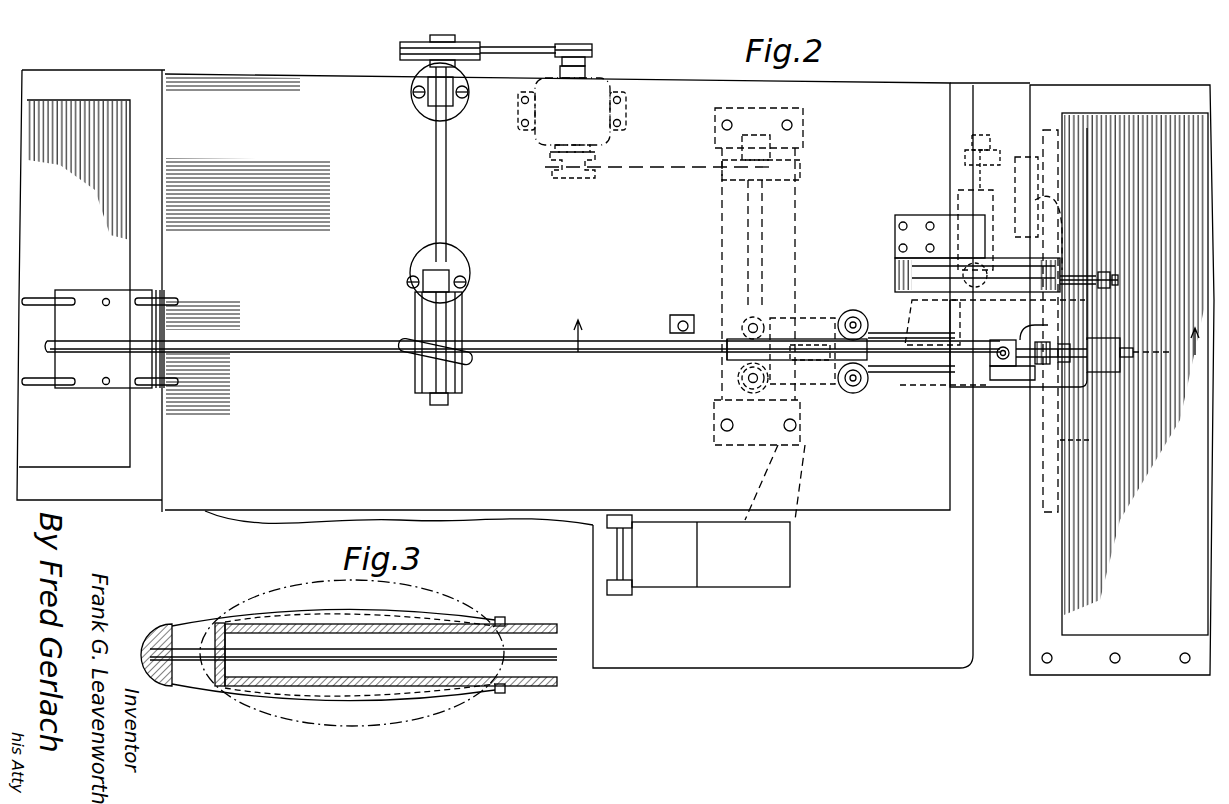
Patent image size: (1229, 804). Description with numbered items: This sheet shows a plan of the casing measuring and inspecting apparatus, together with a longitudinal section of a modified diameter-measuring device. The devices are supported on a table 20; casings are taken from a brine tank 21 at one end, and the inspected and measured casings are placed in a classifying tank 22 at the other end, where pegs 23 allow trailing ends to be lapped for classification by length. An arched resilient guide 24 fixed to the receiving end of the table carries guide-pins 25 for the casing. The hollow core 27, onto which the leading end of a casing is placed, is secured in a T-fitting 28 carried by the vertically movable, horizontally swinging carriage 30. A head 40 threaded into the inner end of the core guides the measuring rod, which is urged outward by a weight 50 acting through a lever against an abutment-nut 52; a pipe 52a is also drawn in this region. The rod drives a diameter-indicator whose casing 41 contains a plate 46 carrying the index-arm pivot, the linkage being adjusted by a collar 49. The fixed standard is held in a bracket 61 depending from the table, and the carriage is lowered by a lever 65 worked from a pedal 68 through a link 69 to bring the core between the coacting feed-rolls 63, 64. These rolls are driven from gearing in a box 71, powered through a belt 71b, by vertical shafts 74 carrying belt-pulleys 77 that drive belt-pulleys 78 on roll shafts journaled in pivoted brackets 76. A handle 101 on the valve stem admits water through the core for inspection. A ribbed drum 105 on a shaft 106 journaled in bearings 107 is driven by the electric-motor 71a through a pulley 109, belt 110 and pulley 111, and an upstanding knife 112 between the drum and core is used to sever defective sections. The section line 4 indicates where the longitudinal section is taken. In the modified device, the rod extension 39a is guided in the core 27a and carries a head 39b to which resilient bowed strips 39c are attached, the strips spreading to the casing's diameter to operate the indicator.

In FIG. 2, the table 20 is at (880, 527).
In FIG. 2, the tank 21 is at (130, 432).
In FIG. 2, the classifying tank 22 is at (1060, 566).
In FIG. 2, the pegs 23 is at (1115, 652).
In FIG. 2, the arched guide 24 is at (109, 339).
In FIG. 2, the guide-pins 25 is at (45, 305).
In FIG. 2, the core 27 is at (1089, 448).
In FIG. 2, the T-fitting 28 is at (522, 390).
In FIG. 2, the carriage 30 is at (1095, 388).
In FIG. 2, the head 40 is at (1142, 312).
In FIG. 2, the indicator casing 41 is at (895, 281).
In FIG. 2, the plate 46 is at (1060, 263).
In FIG. 2, the collar 49 is at (1120, 281).
In FIG. 2, the weight 50 is at (1131, 358).
In FIG. 2, the abutment-nut 52 is at (1065, 366).
In FIG. 2, the pipe 52a is at (1010, 325).
In FIG. 2, the bracket 61 is at (962, 224).
In FIG. 2, the feed-roll 63 is at (856, 394).
In FIG. 2, the feed-roll 64 is at (864, 317).
In FIG. 2, the lever 65 is at (932, 322).
In FIG. 2, the pedal 68 is at (698, 555).
In FIG. 2, the link 69 is at (838, 339).
In FIG. 2, the gear box 71 is at (715, 366).
In FIG. 2, the electric-motor 71a is at (625, 113).
In FIG. 2, the belt 71b is at (647, 170).
In FIG. 2, the vertical drive-shafts 74 is at (764, 320).
In FIG. 2, the bracket 76 is at (810, 325).
In FIG. 2, the belt-pulley 77 is at (745, 387).
In FIG. 2, the belt-pulley 78 is at (745, 316).
In FIG. 2, the handle 101 is at (900, 385).
In FIG. 2, the drum 105 is at (487, 324).
In FIG. 2, the shaft 106 is at (447, 182).
In FIG. 2, the bearings 107 is at (424, 106).
In FIG. 2, the pulley 109 is at (590, 46).
In FIG. 2, the belt 110 is at (537, 47).
In FIG. 2, the pulley 111 is at (474, 44).
In FIG. 2, the knife 112 is at (688, 307).
In FIG. 2, the section line 4- 4 is at (882, 352).
In FIG. 3, the rod extension 39a is at (522, 662).
In FIG. 3, the head 39b is at (169, 623).
In FIG. 3, the resilient bowed strips 39c is at (445, 620).
In FIG. 3, the core 27a is at (527, 632).